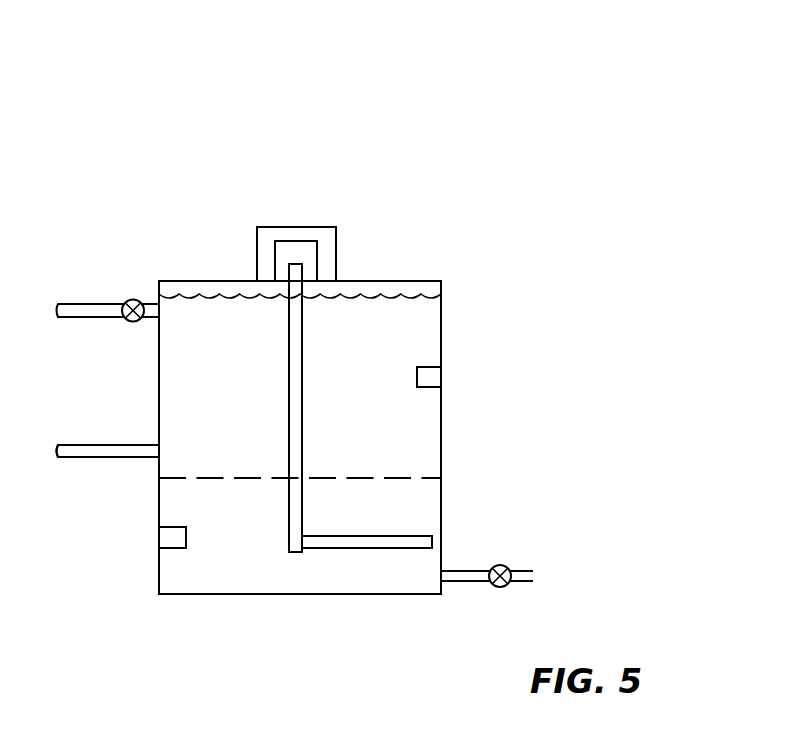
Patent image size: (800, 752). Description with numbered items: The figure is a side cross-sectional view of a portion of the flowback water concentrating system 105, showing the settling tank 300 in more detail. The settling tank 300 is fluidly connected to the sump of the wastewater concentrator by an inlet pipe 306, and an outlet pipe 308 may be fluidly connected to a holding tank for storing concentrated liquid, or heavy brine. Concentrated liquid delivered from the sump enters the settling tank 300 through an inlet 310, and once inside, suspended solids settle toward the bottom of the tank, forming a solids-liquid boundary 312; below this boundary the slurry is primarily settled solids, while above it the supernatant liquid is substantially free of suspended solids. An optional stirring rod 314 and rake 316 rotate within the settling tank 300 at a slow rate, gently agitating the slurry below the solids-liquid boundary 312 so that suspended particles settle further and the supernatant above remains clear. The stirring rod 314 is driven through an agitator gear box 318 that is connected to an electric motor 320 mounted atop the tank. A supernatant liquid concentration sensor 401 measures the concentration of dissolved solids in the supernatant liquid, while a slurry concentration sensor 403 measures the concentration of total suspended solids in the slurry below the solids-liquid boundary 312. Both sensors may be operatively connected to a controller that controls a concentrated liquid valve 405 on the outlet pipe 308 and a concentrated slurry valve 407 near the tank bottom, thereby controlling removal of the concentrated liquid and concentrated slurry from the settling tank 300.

The flowback water concentrating system 105 is at (668, 78).
The settling tank 300 is at (445, 215).
The inlet pipe 306 is at (98, 458).
The outlet pipe 308 is at (93, 304).
The inlet 310 is at (159, 452).
The solids-liquid boundary 312 is at (328, 477).
The stirring rod 314 is at (297, 373).
The rake 316 is at (360, 546).
The agitator gear box 318 is at (308, 241).
The electric motor 320 is at (263, 227).
The supernatant liquid concentration sensor 401 is at (428, 378).
The slurry concentration sensor 403 is at (168, 535).
The concentrated liquid valve 405 is at (135, 300).
The concentrated slurry valve 407 is at (493, 567).